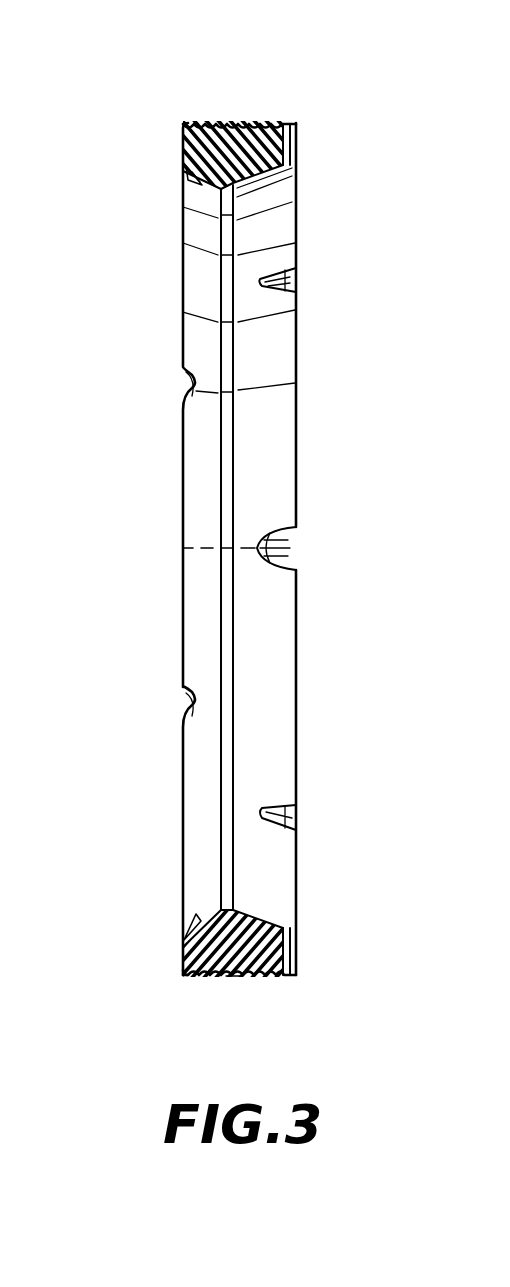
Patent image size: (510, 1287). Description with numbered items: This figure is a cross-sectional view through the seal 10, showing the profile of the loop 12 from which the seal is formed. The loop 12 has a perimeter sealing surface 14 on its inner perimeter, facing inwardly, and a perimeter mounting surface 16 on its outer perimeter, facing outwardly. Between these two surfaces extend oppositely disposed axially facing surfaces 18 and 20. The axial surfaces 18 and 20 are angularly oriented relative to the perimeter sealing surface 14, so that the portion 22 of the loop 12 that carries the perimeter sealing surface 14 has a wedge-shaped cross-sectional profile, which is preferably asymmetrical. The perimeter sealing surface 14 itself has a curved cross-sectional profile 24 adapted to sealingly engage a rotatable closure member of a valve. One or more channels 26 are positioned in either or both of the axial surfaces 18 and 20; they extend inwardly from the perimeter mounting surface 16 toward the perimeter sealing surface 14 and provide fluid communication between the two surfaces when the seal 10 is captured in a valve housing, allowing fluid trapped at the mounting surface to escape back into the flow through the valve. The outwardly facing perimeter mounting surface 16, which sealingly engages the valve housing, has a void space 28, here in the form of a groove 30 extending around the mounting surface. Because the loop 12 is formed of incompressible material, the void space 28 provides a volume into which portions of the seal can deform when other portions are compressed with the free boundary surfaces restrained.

The seal 10 is at (100, 100).
The loop 12 is at (296, 178).
The perimeter sealing surface 14 is at (231, 352).
The perimeter mounting surface 16 is at (247, 122).
The axially facing surface 18 is at (195, 467).
The axially facing surface 20 is at (265, 430).
The wedge-shaped portion 22 is at (222, 918).
The curved cross sectional profile 24 is at (220, 200).
The channel 26 is at (192, 703).
The void space 28 is at (235, 990).
The groove 30 is at (207, 975).